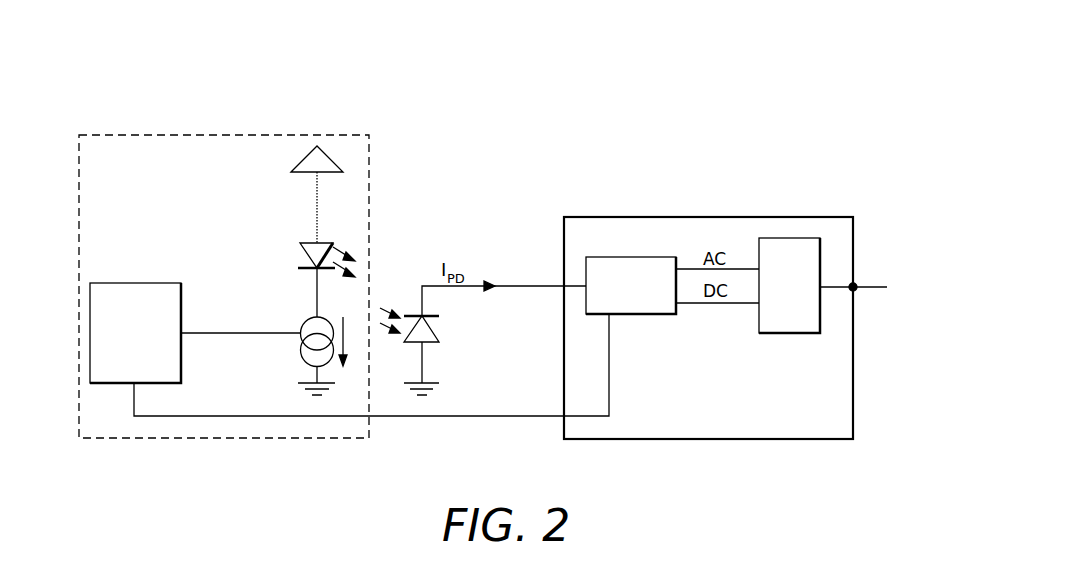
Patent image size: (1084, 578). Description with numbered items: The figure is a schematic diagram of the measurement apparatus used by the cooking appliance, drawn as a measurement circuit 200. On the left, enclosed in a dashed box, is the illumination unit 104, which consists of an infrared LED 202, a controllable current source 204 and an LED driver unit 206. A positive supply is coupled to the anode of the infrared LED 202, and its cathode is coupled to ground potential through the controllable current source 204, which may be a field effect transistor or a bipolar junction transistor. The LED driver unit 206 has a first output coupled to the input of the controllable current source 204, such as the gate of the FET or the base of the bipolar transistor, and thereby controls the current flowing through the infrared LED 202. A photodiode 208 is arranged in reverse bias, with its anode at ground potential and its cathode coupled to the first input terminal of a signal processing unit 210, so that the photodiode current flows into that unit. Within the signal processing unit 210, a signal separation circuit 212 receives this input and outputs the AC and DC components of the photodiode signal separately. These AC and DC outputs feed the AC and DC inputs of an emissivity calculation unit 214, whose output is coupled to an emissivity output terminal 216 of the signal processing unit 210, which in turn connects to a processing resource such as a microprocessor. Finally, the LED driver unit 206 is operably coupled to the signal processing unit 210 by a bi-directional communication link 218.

The illumination unit 104 is at (104, 135).
The measurement circuit 200 is at (680, 121).
The infrared LED 202 is at (300, 252).
The controllable current source 204 is at (300, 350).
The LED driver unit 206 is at (151, 283).
The photodiode 208 is at (437, 332).
The signal processing unit 210 is at (822, 217).
The signal separation circuit 212 is at (649, 316).
The emissivity calculation unit 214 is at (793, 334).
The emissivity output terminal 216 is at (857, 283).
The bi-directional communication link 218 is at (505, 418).